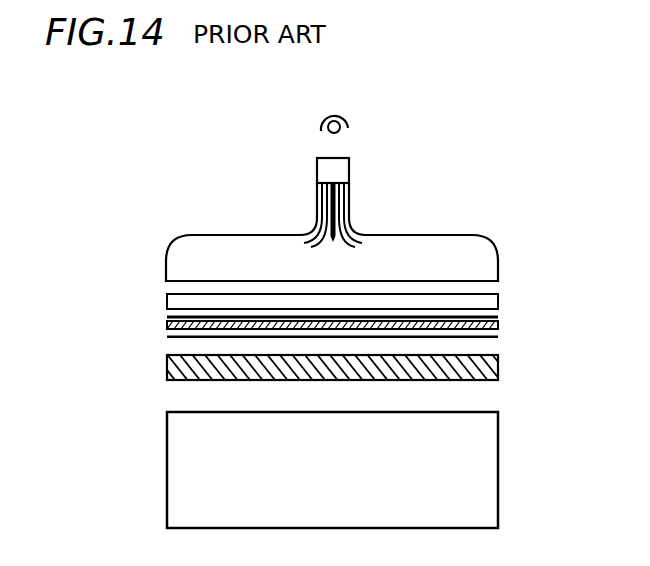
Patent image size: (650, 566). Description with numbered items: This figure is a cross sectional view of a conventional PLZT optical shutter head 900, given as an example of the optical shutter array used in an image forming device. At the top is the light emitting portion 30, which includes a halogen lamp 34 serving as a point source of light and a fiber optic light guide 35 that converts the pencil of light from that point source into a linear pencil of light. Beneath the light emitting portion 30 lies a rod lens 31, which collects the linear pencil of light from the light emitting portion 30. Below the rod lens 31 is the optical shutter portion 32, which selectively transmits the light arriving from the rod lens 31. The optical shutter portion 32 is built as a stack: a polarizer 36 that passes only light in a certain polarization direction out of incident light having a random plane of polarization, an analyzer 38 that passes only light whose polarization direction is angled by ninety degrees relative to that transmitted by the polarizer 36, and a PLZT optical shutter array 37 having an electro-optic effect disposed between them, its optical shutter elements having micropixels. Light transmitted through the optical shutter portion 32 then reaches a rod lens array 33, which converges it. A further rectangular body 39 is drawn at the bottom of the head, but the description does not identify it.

The PLZT optical shutter head 900 is at (538, 130).
The light emitting portion 30 is at (265, 110).
The halogen lamp 34 is at (323, 128).
The fiber optic light guide 35 is at (328, 195).
The rod lens 31 is at (170, 301).
The optical shutter portion 32 is at (562, 287).
The polarizer 36 is at (498, 313).
The PLZT optical shutter array 37 is at (498, 324).
The analyzer 38 is at (498, 338).
The rod lens array 33 is at (173, 372).
The housing 39 is at (173, 467).